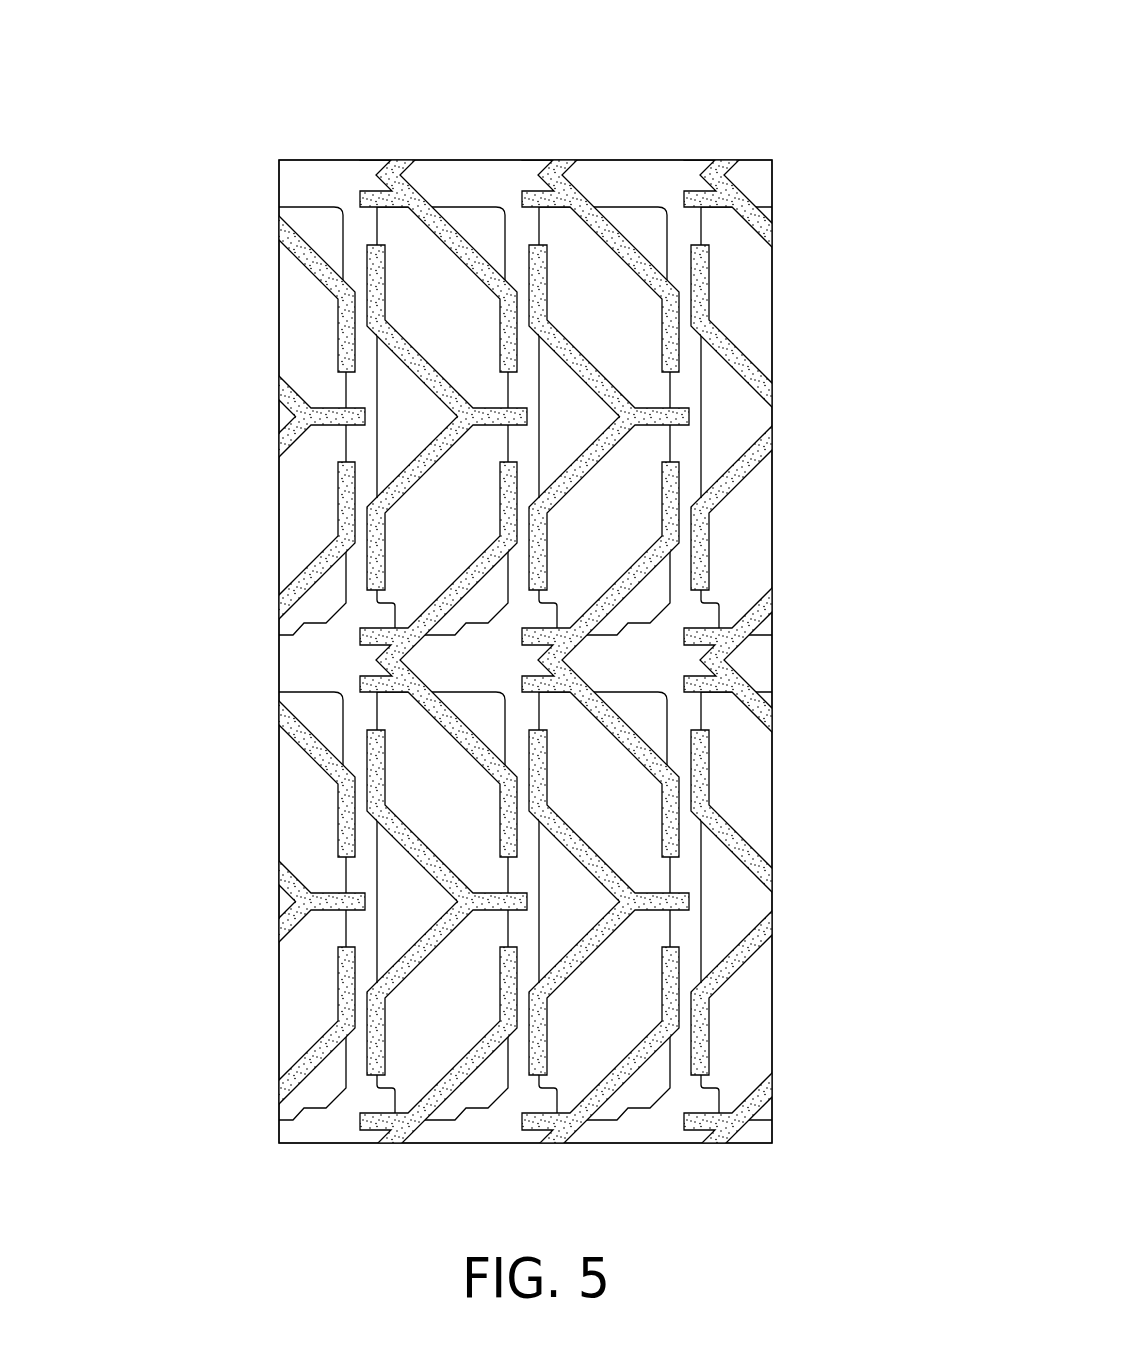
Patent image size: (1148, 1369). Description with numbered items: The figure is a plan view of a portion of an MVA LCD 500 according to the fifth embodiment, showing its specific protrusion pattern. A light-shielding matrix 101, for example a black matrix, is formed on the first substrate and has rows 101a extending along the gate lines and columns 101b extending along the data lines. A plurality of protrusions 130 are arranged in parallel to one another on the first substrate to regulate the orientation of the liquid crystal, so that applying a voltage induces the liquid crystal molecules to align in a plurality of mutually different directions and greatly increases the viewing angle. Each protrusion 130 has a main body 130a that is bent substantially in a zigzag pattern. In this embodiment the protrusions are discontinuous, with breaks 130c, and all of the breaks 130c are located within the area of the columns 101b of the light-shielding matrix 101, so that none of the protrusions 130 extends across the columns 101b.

The MVA LCD 500 is at (137, 71).
The light-shielding matrix 101 is at (297, 156).
The rows of the light-shielding matrix 101a is at (292, 656).
The columns of the light-shielding matrix 101b is at (352, 381).
The protrusion 130 is at (547, 671).
The main body 130a is at (748, 472).
The break 130c is at (710, 520).